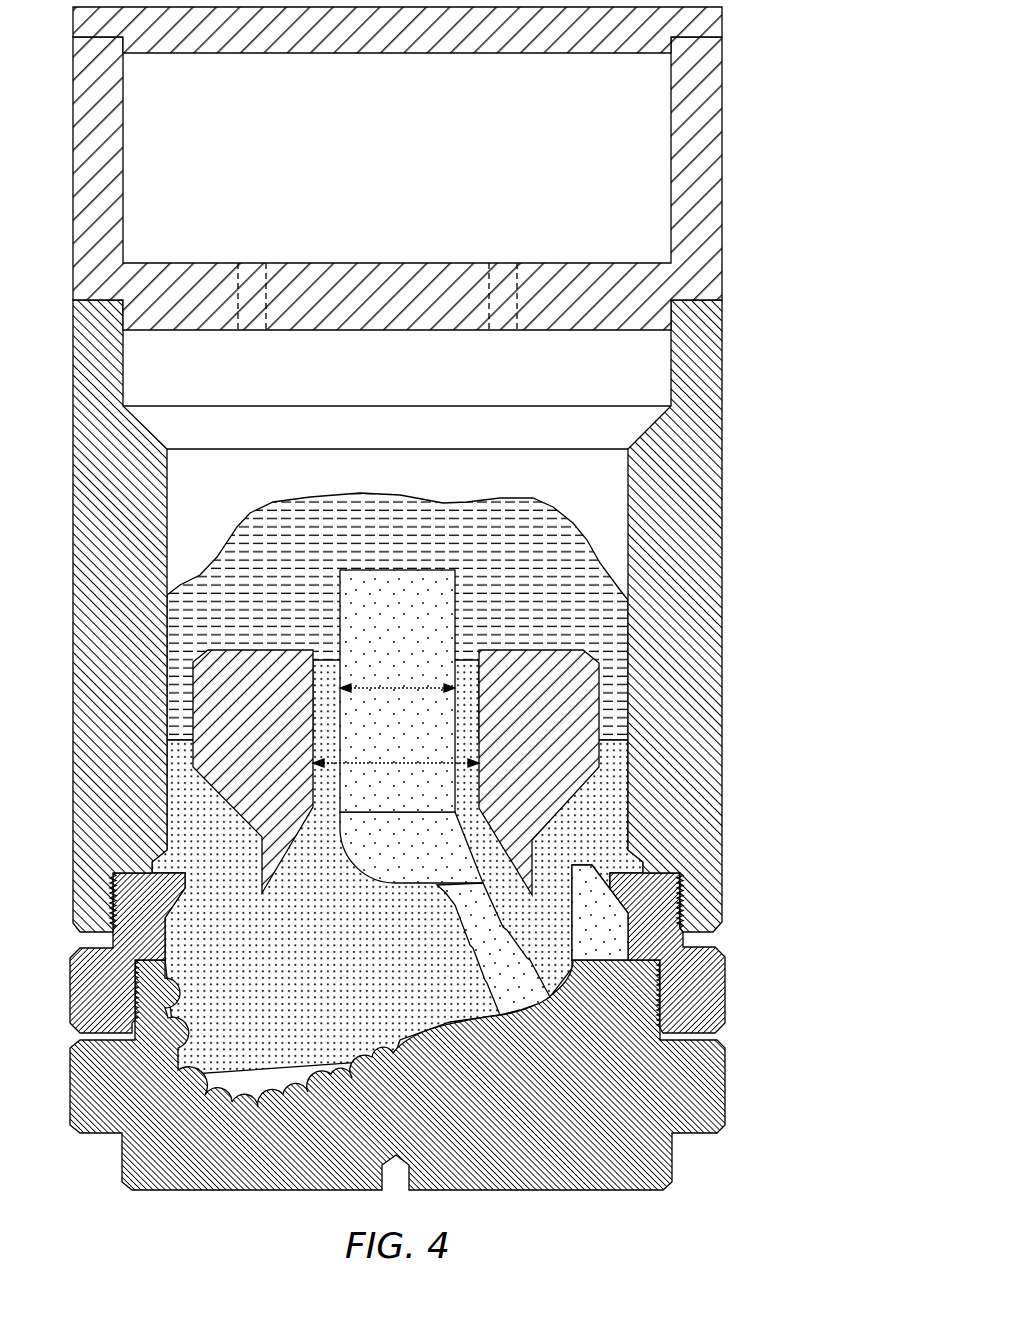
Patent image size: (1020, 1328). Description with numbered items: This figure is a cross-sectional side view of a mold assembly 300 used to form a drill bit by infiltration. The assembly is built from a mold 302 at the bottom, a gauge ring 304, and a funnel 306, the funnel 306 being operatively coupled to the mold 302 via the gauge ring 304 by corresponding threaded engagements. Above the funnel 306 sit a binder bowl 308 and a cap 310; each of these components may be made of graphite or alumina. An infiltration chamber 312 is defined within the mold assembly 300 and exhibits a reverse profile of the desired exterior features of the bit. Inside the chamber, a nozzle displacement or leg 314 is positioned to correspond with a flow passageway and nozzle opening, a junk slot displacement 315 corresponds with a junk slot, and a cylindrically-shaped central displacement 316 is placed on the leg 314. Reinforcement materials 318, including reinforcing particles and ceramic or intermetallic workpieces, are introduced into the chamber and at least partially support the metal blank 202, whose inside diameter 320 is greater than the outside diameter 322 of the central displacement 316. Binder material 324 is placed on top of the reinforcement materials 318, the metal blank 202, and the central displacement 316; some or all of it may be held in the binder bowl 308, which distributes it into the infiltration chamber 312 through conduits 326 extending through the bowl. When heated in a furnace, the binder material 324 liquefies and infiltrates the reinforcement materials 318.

The mold assembly 300 is at (443, 620).
The mold 302 is at (745, 1089).
The gauge ring 304 is at (746, 983).
The funnel 306 is at (746, 538).
The binder bowl 308 is at (730, 222).
The cap 310 is at (730, 22).
The infiltration chamber 312 is at (236, 488).
The leg 314 is at (531, 998).
The junk slot displacement 315 is at (616, 938).
The central displacement 316 is at (416, 643).
The reinforcement materials 318 is at (317, 991).
The inside diameter 320 is at (362, 765).
The outside diameter 322 is at (405, 688).
The binder material 324 is at (445, 503).
The conduits 326 is at (240, 305).
The metal blank 202 is at (562, 731).